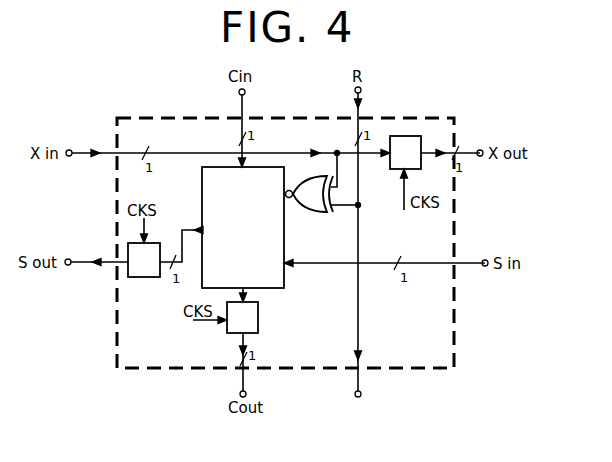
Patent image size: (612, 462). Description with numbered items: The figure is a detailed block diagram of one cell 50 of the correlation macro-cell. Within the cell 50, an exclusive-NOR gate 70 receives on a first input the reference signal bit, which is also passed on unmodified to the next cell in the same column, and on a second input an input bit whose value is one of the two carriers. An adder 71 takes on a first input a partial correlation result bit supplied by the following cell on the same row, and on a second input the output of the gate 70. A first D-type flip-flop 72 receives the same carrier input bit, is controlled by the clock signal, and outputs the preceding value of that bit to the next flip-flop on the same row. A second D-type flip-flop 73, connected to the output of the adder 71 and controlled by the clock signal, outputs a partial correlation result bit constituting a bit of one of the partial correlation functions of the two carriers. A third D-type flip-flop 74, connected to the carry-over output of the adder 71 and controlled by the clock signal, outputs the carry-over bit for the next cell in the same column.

The cell 50 is at (440, 118).
The exclusive-NOR gate 70 is at (305, 213).
The adder 71 is at (284, 283).
The first D-type flip-flop 72 is at (394, 169).
The second D-type flip-flop 73 is at (148, 277).
The third D-type flip-flop 74 is at (258, 318).